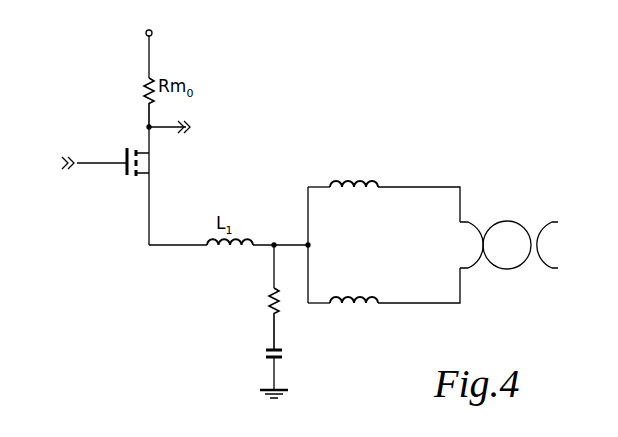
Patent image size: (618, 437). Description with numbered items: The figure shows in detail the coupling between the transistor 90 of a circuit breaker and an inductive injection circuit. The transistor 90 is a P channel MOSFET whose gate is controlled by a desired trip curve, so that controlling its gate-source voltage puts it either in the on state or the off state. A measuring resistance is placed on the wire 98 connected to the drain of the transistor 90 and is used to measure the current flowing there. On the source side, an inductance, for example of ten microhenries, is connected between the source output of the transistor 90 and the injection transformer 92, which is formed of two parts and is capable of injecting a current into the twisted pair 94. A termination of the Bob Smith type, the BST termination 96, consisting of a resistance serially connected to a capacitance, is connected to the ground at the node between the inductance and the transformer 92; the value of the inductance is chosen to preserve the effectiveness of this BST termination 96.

The transistor 90 is at (137, 183).
The injection transformer 92 is at (428, 187).
The twisted pair 94 is at (507, 221).
The BST termination 96 is at (253, 285).
The wire 98 is at (148, 44).